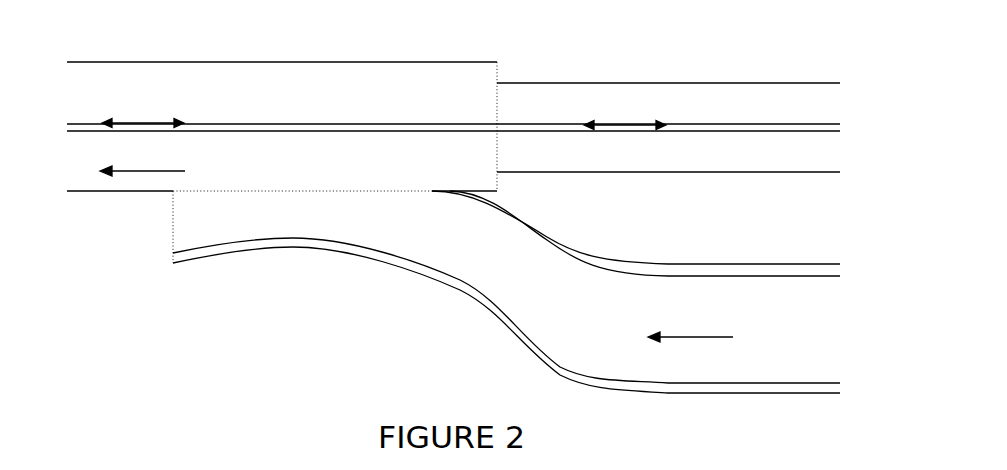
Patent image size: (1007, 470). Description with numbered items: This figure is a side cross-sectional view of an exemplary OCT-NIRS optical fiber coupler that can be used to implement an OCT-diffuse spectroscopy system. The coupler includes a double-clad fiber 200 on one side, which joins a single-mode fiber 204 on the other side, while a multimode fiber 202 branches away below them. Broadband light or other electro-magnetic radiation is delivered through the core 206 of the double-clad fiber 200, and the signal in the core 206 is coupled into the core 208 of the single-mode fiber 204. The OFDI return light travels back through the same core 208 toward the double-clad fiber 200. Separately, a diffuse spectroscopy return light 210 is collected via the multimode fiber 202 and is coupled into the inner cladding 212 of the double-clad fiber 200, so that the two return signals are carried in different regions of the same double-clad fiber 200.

The double-clad fiber 200 is at (269, 57).
The multimode fiber 202 is at (480, 302).
The single-mode fiber 204 is at (577, 80).
The core of the double-clad fiber 206 is at (165, 118).
The core of the single-mode fiber 208 is at (621, 122).
The diffuse spectroscopy return light 210 is at (693, 337).
The inner cladding of the double-clad fiber 212 is at (147, 165).